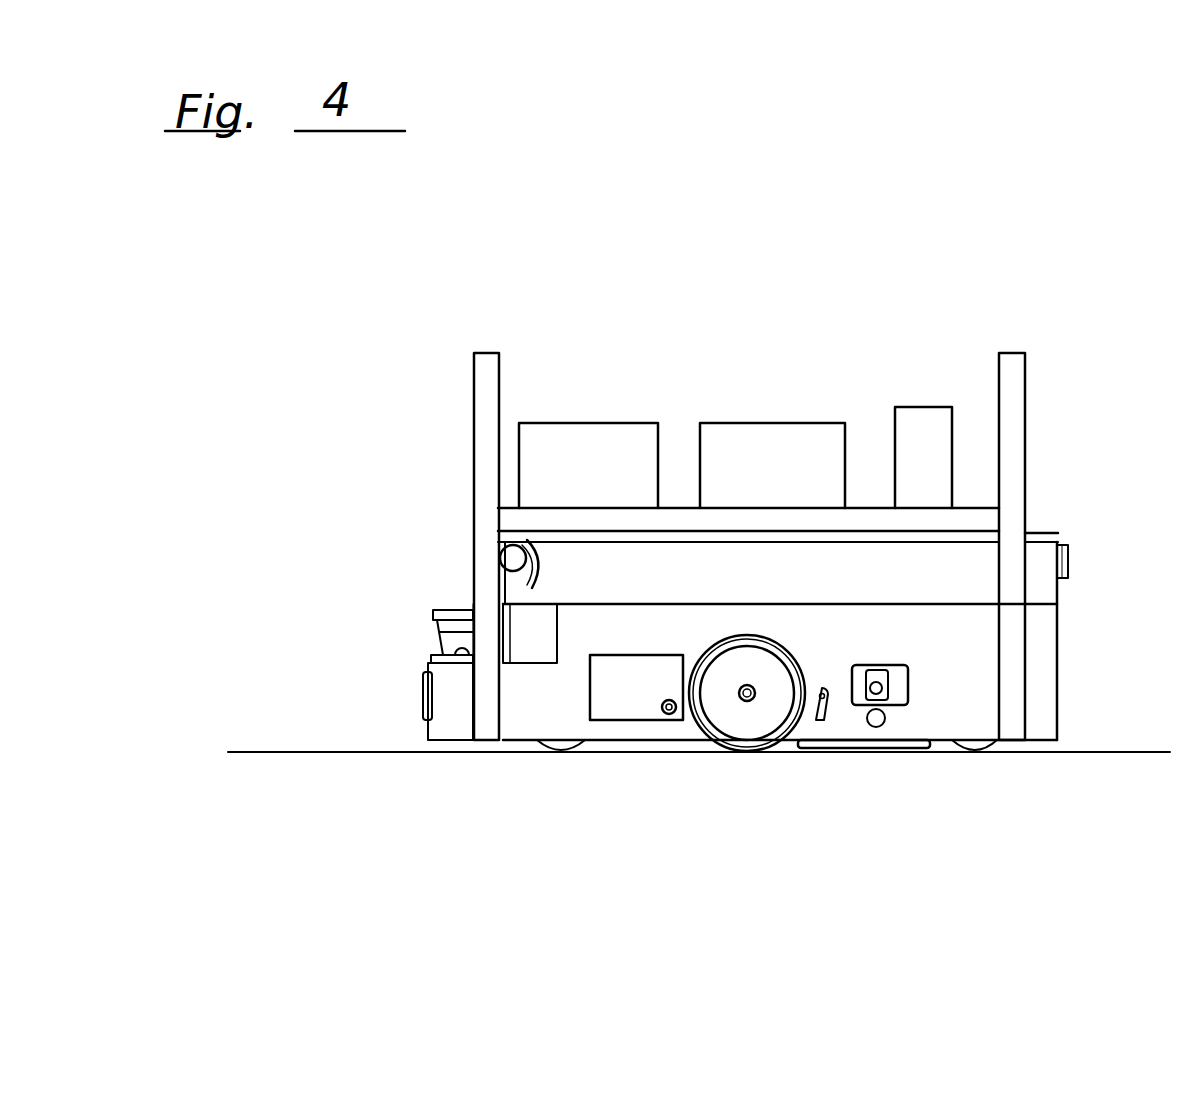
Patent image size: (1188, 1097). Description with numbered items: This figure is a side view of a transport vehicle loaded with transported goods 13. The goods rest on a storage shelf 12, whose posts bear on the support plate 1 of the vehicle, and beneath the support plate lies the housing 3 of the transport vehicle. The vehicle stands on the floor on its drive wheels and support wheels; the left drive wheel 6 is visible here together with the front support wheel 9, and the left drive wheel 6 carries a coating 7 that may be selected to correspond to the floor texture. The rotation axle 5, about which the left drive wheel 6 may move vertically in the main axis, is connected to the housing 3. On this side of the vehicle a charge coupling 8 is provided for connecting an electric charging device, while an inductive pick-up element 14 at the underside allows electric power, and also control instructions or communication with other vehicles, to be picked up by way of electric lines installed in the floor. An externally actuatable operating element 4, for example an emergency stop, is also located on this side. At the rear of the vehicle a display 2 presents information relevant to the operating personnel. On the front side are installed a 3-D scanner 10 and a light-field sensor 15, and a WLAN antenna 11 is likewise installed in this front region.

The support plate 1 is at (1040, 532).
The display 2 is at (1060, 559).
The housing 3 is at (1037, 658).
The operating element 4 is at (877, 692).
The rotation axle 5 is at (820, 702).
The left drive wheel 6 is at (750, 730).
The coating 7 is at (713, 740).
The charge coupling 8 is at (662, 712).
The front support wheel 9 is at (545, 746).
The 3-D scanner 10 is at (447, 627).
The WLAN antenna 11 is at (512, 562).
The storage shelf 12 is at (483, 405).
The transported goods 13 is at (937, 418).
The inductive pick-up element 14 is at (912, 752).
The light-field sensor 15 is at (427, 702).